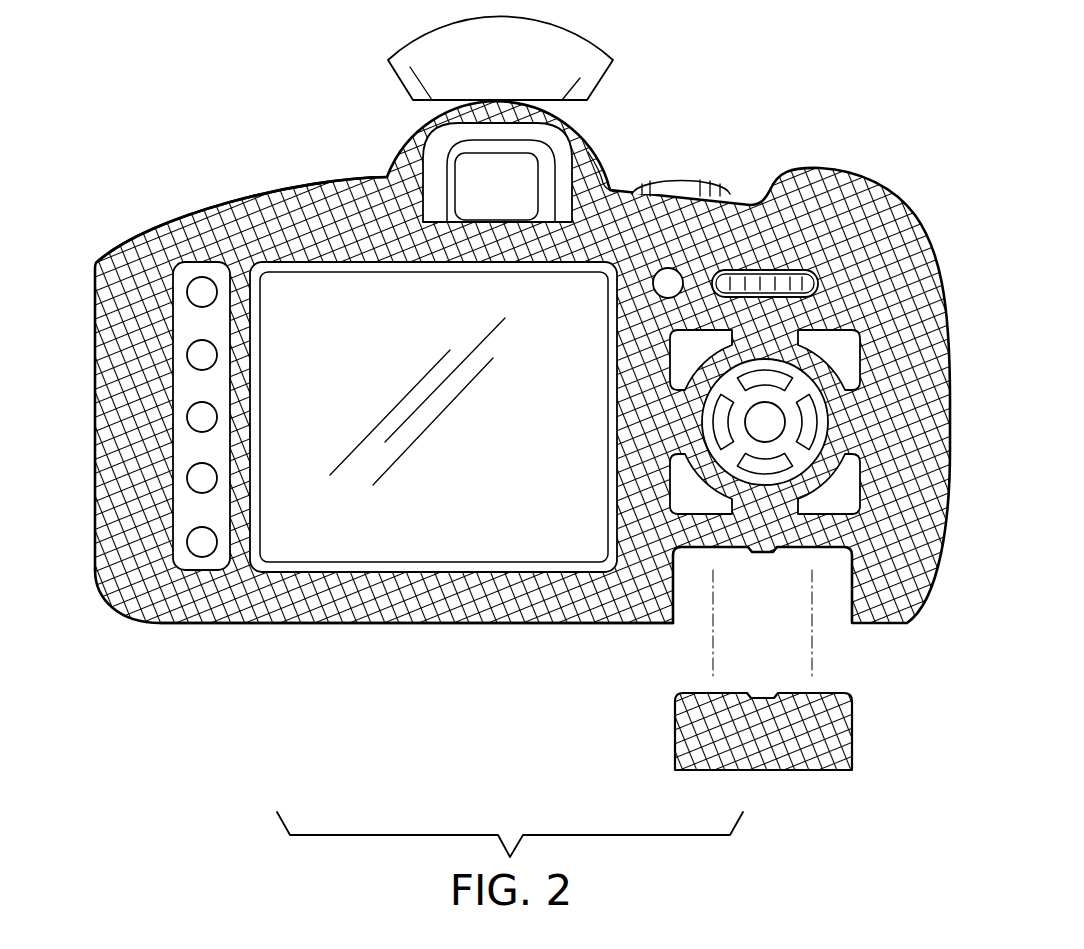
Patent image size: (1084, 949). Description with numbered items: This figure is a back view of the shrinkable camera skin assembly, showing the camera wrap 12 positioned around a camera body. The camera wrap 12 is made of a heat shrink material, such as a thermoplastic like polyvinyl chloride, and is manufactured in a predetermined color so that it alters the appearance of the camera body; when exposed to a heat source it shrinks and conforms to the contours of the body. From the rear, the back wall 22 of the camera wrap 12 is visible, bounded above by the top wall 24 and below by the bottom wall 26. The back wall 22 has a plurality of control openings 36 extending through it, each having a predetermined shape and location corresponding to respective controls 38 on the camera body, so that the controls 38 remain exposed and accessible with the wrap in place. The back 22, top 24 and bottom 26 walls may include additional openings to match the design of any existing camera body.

The camera wrap 12 is at (98, 263).
The back wall 22 is at (180, 232).
The top wall 24 is at (287, 188).
The bottom wall 26 is at (465, 623).
The control openings 36 is at (660, 357).
The controls 38 is at (185, 417).